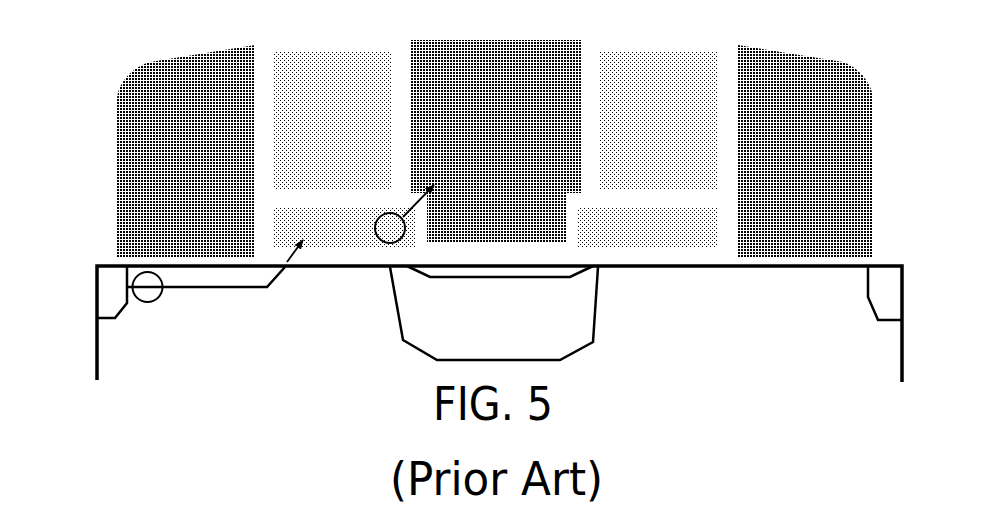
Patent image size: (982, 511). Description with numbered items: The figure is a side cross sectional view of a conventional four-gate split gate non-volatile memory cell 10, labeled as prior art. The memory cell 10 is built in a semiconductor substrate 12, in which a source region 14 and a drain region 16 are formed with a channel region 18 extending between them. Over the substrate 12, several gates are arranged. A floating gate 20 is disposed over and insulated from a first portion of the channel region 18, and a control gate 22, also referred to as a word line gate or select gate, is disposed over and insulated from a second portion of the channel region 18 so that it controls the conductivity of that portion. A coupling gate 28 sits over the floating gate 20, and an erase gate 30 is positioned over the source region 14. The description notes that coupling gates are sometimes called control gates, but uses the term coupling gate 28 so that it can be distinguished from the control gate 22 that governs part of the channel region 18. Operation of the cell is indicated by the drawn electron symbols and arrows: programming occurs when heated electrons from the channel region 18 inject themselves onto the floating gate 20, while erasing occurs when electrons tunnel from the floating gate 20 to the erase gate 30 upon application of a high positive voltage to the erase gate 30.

The memory cell 10 is at (127, 67).
The semiconductor substrate 12 is at (165, 363).
The source region 14 is at (514, 331).
The drain region 16 is at (108, 292).
The channel region 18 is at (325, 312).
The floating gate 20 is at (365, 230).
The control gate 22 is at (202, 186).
The coupling gate 28 is at (350, 139).
The erase gate 30 is at (514, 117).